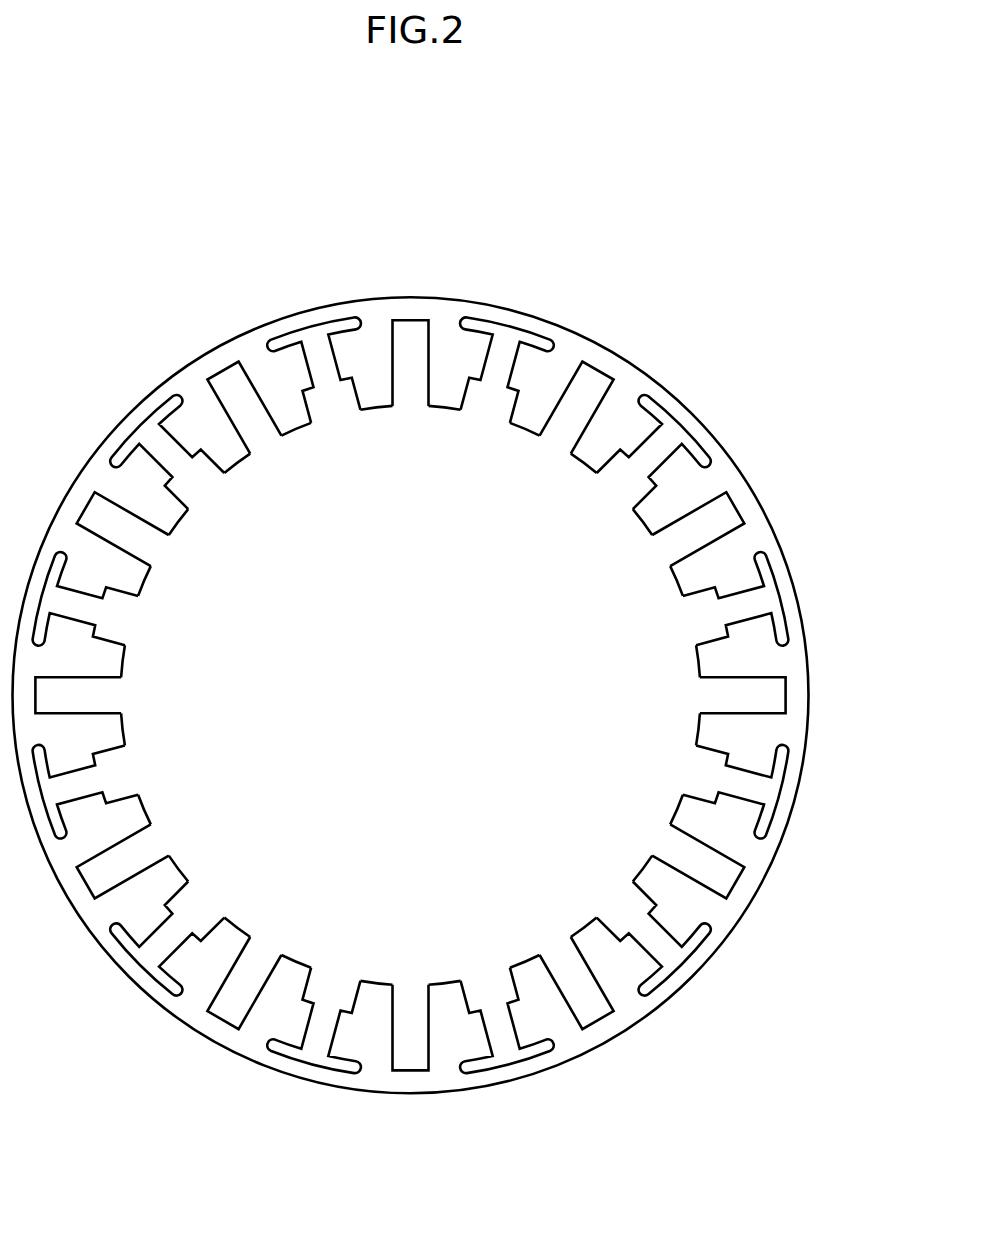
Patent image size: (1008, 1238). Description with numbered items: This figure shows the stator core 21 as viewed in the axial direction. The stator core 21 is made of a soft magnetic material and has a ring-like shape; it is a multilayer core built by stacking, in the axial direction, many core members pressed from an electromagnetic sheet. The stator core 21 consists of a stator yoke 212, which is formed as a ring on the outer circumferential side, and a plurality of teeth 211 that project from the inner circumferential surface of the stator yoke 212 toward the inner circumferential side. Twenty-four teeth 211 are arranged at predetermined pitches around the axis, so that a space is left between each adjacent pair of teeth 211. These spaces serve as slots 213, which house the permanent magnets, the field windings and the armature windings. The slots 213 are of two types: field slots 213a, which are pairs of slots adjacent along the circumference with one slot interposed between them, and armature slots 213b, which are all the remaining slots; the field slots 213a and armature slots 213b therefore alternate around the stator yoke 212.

The stator core 21 is at (687, 148).
The teeth 211 is at (285, 418).
The stator yoke 212 is at (373, 318).
The slots 213 is at (416, 633).
The field slots 213a is at (323, 347).
The armature slots 213b is at (415, 338).